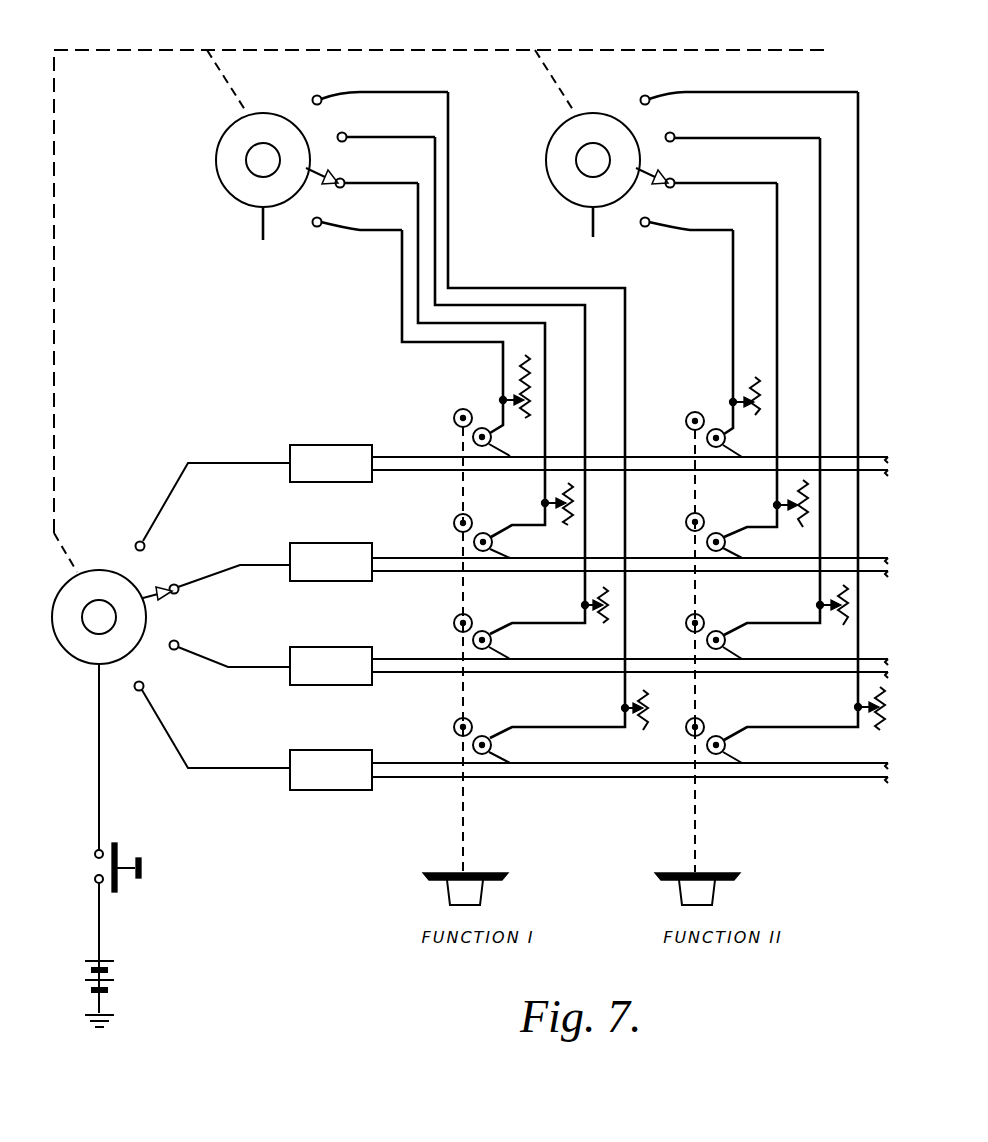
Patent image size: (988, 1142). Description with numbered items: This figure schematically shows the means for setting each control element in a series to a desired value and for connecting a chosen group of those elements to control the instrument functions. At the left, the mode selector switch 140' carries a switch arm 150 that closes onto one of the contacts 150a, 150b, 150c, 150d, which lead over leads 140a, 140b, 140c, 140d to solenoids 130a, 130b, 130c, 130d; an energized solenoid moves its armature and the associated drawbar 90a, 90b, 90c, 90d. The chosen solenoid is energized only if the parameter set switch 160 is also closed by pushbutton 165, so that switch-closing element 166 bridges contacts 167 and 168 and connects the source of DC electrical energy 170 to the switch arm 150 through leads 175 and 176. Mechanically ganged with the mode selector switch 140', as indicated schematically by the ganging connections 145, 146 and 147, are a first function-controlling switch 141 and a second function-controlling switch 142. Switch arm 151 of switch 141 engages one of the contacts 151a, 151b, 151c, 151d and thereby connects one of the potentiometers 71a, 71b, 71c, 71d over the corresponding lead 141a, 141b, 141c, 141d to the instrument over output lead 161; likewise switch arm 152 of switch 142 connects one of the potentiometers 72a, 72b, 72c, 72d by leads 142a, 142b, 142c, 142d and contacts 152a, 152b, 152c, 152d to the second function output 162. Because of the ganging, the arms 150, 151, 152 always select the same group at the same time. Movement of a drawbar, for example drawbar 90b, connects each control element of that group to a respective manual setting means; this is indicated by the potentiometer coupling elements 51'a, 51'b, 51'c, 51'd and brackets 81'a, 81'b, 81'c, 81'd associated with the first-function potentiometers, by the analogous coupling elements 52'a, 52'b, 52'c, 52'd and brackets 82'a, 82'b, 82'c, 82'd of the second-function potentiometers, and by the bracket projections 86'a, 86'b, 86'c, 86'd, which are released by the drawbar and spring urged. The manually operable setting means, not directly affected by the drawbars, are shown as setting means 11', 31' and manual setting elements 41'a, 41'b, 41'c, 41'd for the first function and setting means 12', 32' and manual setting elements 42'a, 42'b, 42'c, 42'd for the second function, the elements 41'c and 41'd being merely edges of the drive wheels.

The ganging connection 145 is at (108, 50).
The ganging connection 146 is at (220, 82).
The ganging connection 147 is at (553, 90).
The first function-controlling switch 141 is at (210, 148).
The second function-controlling switch 142 is at (540, 152).
The output lead 161 is at (258, 222).
The function output 162 is at (590, 222).
The switch arm 151 is at (328, 168).
The switch arm 152 is at (658, 168).
The switch contact 151a is at (320, 214).
The switch contact 151b is at (345, 177).
The switch contact 151c is at (345, 132).
The switch contact 151d is at (320, 92).
The switch contact 152a is at (648, 214).
The switch contact 152b is at (673, 177).
The switch contact 152c is at (673, 132).
The switch contact 152d is at (648, 92).
The lead 141a is at (402, 280).
The lead 141b is at (418, 312).
The lead 141c is at (436, 248).
The lead 141d is at (449, 263).
The lead 142a is at (732, 307).
The lead 142b is at (775, 300).
The lead 142c is at (818, 293).
The lead 142d is at (860, 264).
The potentiometer 71a is at (525, 374).
The potentiometer 71b is at (570, 527).
The potentiometer 71c is at (603, 623).
The potentiometer 71d is at (643, 730).
The potentiometer 72a is at (758, 377).
The potentiometer 72b is at (810, 515).
The potentiometer 72c is at (843, 625).
The potentiometer 72d is at (880, 730).
The manual setting element 41'a is at (432, 412).
The manual setting element 41'b is at (432, 522).
The drive wheel edge 41'c is at (432, 625).
The drive wheel edge 41'd is at (432, 728).
The manual setting element 42'a is at (671, 403).
The manual setting element 42'b is at (668, 509).
The manual setting element 42'c is at (671, 612).
The manual setting element 42'd is at (671, 710).
The potentiometer coupling element 51'a is at (470, 408).
The potentiometer coupling element 51'b is at (485, 525).
The potentiometer coupling element 51'c is at (491, 618).
The potentiometer coupling element 51'd is at (492, 719).
The potentiometer coupling element 52'a is at (715, 399).
The potentiometer coupling element 52'b is at (723, 516).
The potentiometer coupling element 52'c is at (728, 613).
The potentiometer coupling element 52'd is at (729, 718).
The bracket 81'a is at (538, 414).
The bracket 81'b is at (525, 506).
The bracket 81'c is at (546, 610).
The bracket 81'd is at (566, 711).
The bracket 82'a is at (772, 415).
The bracket 82'b is at (761, 517).
The bracket 82'c is at (782, 606).
The bracket 82'd is at (801, 711).
The bracket projection 86'a is at (653, 443).
The bracket projection 86'b is at (636, 547).
The bracket projection 86'c is at (637, 648).
The bracket projection 86'd is at (641, 752).
The drawbar 90a is at (445, 473).
The drawbar 90b is at (440, 575).
The drawbar 90c is at (440, 676).
The drawbar 90d is at (438, 782).
The solenoid 130a is at (305, 485).
The solenoid 130b is at (305, 584).
The solenoid 130c is at (305, 688).
The solenoid 130d is at (305, 792).
The lead 140a is at (235, 463).
The lead 140b is at (262, 567).
The lead 140c is at (262, 678).
The lead 140d is at (262, 772).
The switch arm 150 is at (147, 590).
The switch contact 150a is at (137, 543).
The switch contact 150b is at (180, 575).
The switch contact 150c is at (172, 652).
The switch contact 150d is at (138, 692).
The mode selector switch 140' is at (80, 644).
The lead 176 is at (97, 777).
The lead 175 is at (97, 940).
The switch contact 167 is at (94, 854).
The switch contact 168 is at (94, 879).
The parameter set switch 160 is at (166, 852).
The switch-closing element 166 is at (114, 843).
The pushbutton 165 is at (138, 878).
The source of DC electrical energy 170 is at (110, 970).
The manually operable setting means 11' is at (497, 666).
The manually operable setting means 31' is at (465, 666).
The manually operable setting means 12' is at (727, 667).
The manually operable setting means 32' is at (697, 667).